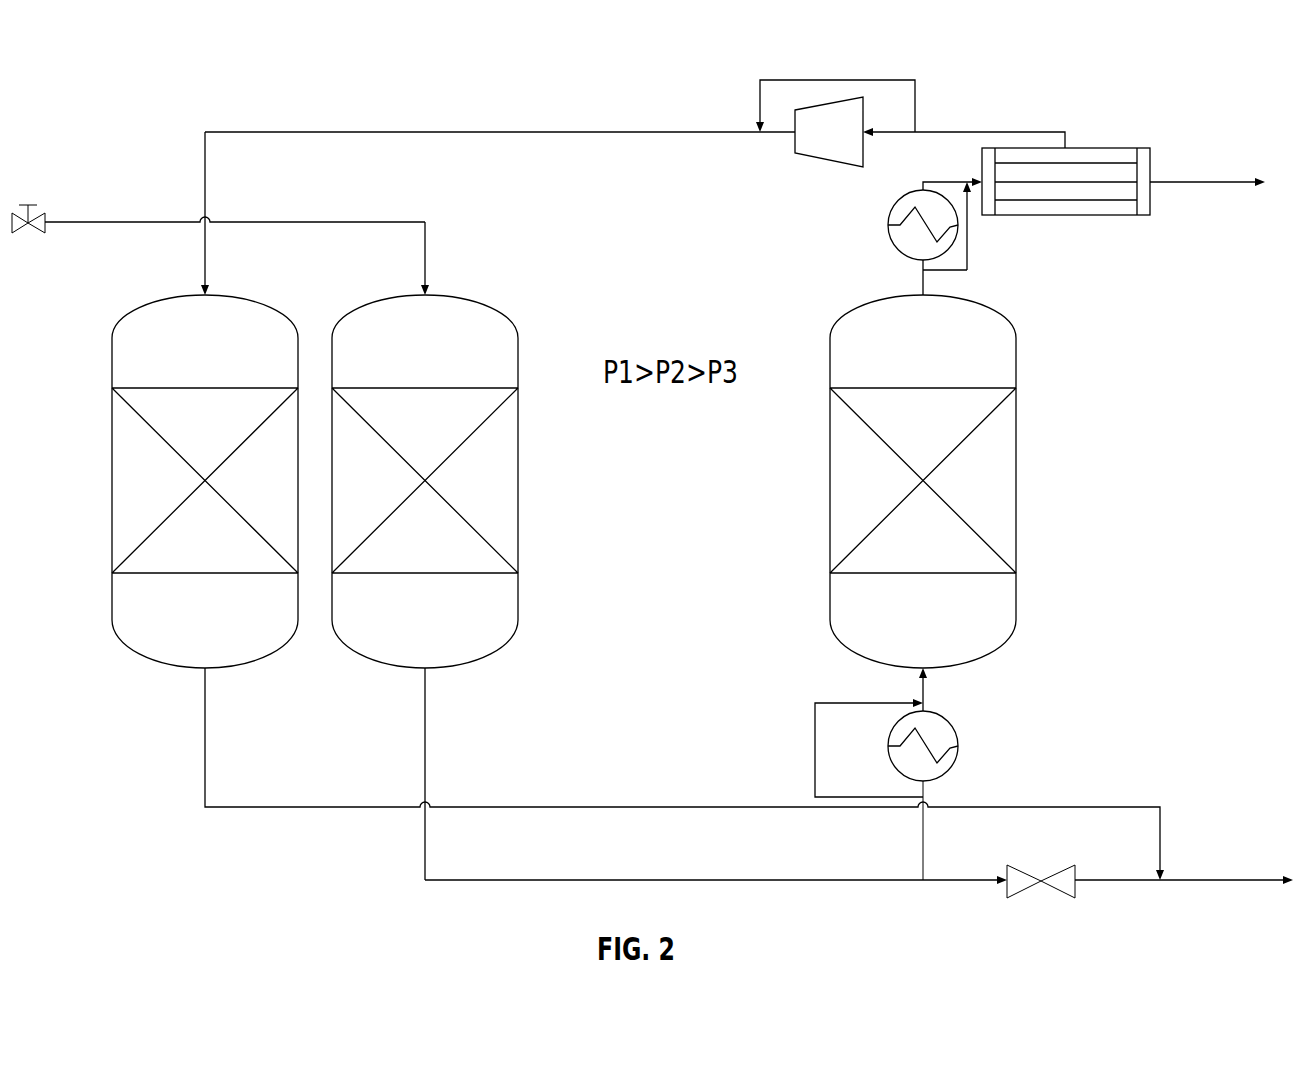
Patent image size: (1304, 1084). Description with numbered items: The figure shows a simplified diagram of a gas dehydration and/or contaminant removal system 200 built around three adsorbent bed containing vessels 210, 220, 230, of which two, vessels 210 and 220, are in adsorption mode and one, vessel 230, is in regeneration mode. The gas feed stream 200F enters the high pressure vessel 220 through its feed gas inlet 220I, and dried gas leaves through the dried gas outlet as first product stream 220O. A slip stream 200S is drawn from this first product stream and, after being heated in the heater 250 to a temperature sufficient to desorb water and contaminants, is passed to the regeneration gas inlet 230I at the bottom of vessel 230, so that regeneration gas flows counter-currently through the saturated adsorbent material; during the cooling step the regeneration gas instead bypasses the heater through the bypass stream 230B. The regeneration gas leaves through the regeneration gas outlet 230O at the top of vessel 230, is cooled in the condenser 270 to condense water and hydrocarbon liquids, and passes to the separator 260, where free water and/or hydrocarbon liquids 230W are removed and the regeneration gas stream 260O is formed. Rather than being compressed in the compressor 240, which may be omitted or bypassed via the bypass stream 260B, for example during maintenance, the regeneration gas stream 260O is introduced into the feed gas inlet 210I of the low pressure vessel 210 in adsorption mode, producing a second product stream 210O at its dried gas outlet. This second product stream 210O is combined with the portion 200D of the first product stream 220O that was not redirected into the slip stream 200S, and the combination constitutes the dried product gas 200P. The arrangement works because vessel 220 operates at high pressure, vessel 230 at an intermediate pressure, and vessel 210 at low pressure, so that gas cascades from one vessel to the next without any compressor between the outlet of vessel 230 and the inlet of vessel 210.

The system 200 is at (84, 126).
The gas feed stream 200F is at (218, 210).
The feed gas inlet 210I is at (173, 213).
The feed gas inlet 220I is at (393, 258).
The first adsorbent bed containing vessel 210 is at (228, 347).
The second adsorbent bed containing vessel 220 is at (448, 347).
The third adsorbent bed containing vessel 230 is at (945, 347).
The compressor 240 is at (853, 147).
The heater 250 is at (895, 746).
The separator 260 is at (1066, 202).
The condenser 270 is at (909, 224).
The regeneration gas stream 260O is at (500, 114).
The bypass stream 260B is at (835, 84).
The free water and/or hydrocarbon liquids 230W is at (1207, 166).
The regeneration gas outlet 230O is at (907, 280).
The regeneration gas inlet 230I is at (894, 689).
The bypass stream 230B is at (834, 748).
The second product stream 210O is at (647, 774).
The first product stream 220O is at (387, 774).
The slip stream 200S is at (889, 830).
The first product stream portion 200D is at (750, 892).
The dried product gas 200P is at (1184, 869).